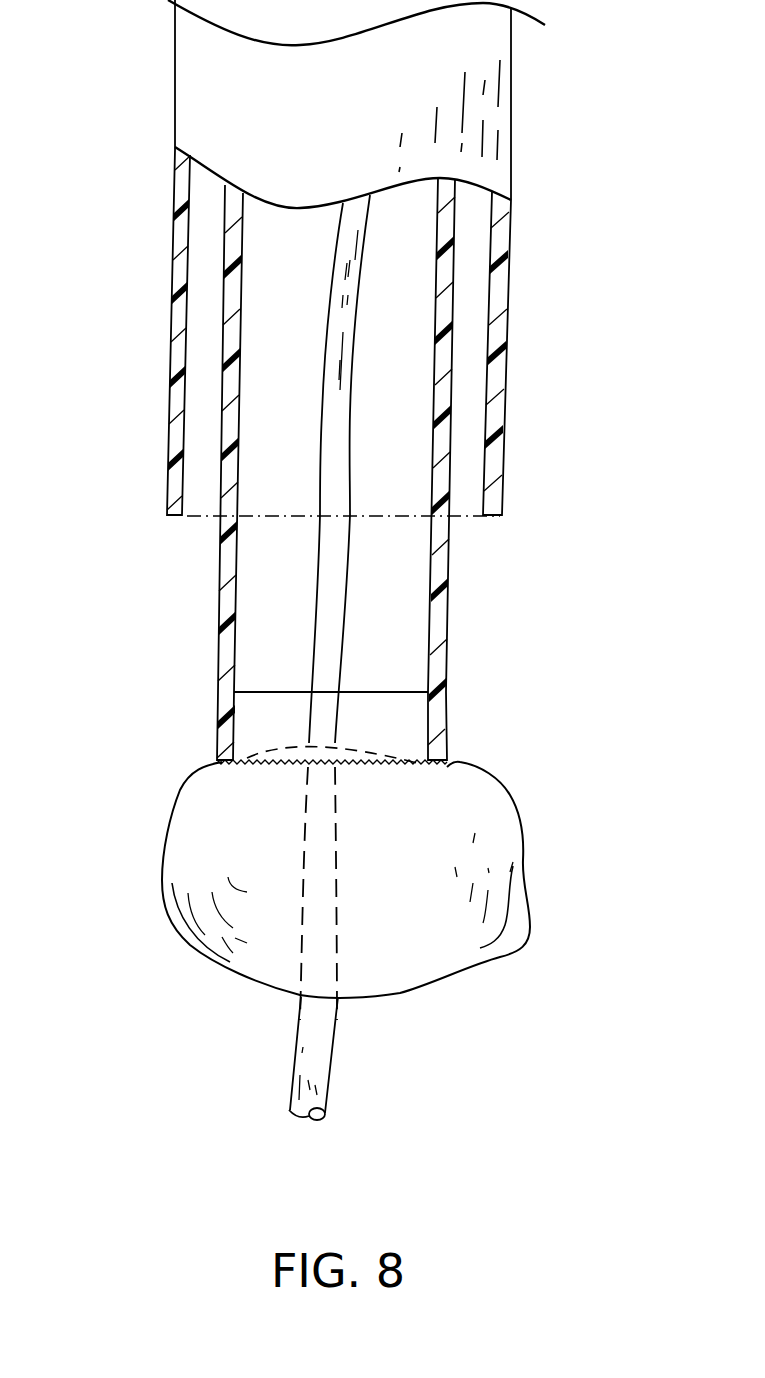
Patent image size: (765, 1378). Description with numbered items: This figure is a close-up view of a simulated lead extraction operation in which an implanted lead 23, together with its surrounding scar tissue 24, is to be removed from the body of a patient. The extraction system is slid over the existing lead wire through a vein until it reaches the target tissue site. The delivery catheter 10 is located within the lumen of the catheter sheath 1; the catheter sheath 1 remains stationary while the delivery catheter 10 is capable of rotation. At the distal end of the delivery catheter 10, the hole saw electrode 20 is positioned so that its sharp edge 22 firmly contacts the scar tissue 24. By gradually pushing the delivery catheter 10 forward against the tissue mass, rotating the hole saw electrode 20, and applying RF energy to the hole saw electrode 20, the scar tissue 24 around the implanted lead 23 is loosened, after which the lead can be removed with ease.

The catheter sheath 1 is at (510, 241).
The delivery catheter 10 is at (451, 570).
The hole saw electrode 20 is at (450, 715).
The sharp edge 22 is at (230, 815).
The implanted lead 23 is at (338, 1042).
The scar tissue 24 is at (523, 830).